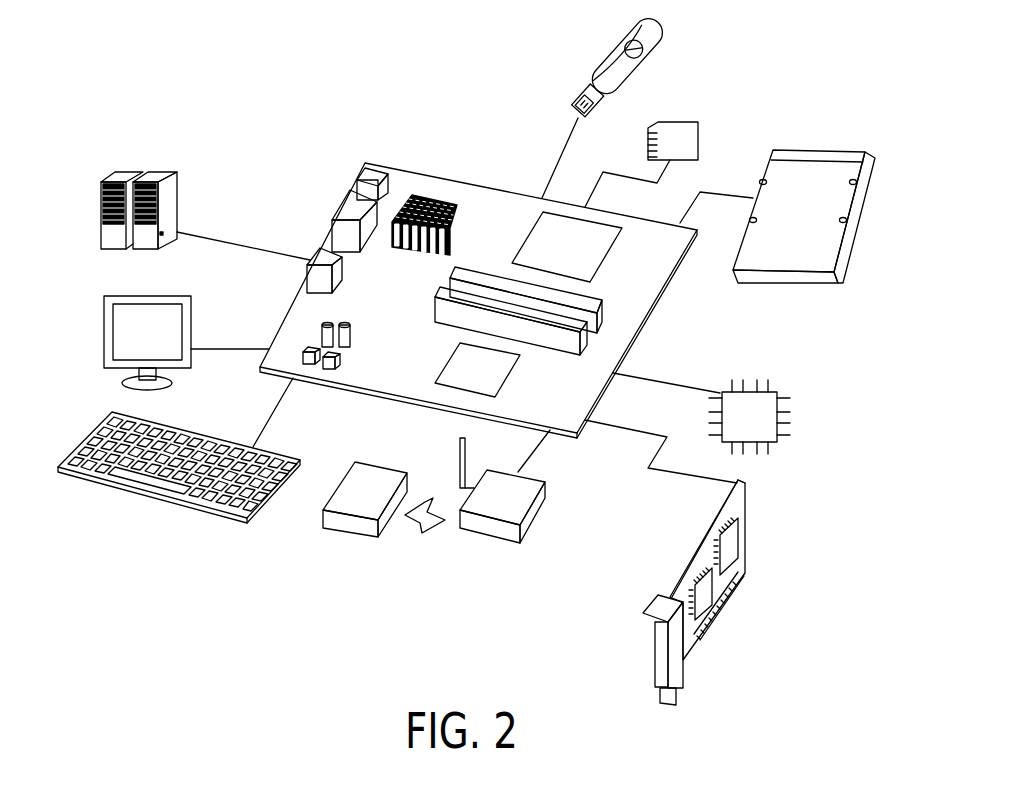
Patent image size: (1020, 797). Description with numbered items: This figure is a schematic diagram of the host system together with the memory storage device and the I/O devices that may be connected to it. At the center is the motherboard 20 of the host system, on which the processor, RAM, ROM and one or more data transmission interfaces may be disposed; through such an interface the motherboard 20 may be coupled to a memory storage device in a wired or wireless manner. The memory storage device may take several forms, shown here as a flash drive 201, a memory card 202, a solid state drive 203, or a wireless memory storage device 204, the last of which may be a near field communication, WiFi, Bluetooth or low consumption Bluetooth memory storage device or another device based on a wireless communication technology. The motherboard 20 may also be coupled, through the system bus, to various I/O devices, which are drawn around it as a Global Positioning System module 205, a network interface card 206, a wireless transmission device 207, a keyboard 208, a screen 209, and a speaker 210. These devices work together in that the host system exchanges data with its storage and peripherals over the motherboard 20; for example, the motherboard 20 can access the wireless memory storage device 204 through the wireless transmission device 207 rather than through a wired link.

The motherboard 20 is at (482, 207).
The flash drive 201 is at (604, 58).
The memory card 202 is at (700, 130).
The solid state drive 203 is at (822, 150).
The wireless memory storage device 204 is at (337, 477).
The Global Positioning System module 205 is at (790, 415).
The network interface card 206 is at (747, 537).
The wireless transmission device 207 is at (537, 518).
The keyboard 208 is at (183, 505).
The screen 209 is at (104, 350).
The speaker 210 is at (101, 235).